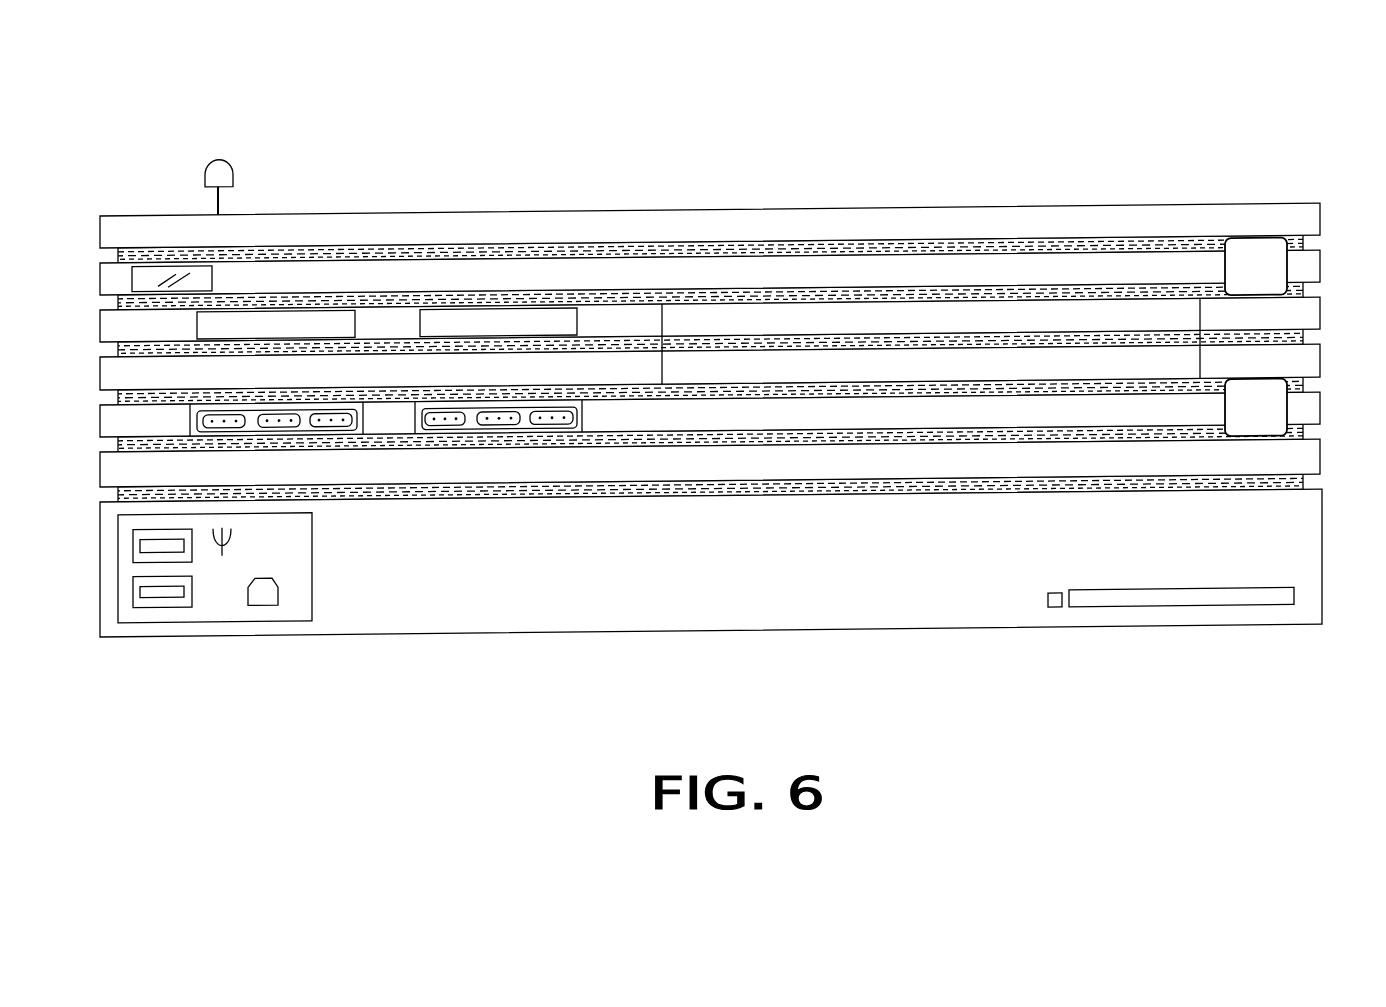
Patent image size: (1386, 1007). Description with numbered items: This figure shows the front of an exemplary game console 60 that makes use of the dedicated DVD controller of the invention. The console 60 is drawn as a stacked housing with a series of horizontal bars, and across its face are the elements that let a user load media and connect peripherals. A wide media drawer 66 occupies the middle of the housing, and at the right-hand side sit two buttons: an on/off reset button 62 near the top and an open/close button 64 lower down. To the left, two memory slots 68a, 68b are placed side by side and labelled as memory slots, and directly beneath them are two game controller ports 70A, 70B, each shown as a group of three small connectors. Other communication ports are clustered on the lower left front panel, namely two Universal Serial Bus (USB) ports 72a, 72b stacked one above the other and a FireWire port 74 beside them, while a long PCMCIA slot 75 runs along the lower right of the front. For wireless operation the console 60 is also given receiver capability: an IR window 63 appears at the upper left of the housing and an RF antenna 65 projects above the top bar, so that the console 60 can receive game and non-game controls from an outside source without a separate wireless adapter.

The game console 60 is at (715, 217).
The on/off reset button 62 is at (1272, 267).
The IR window 63 is at (153, 270).
The open/close button 64 is at (1272, 410).
The RF antenna 65 is at (216, 163).
The media drawer 66 is at (1033, 313).
The memory slot 68a is at (308, 308).
The memory slot 68b is at (552, 307).
The game controller port 70A is at (303, 425).
The game controller port 70B is at (527, 423).
The Universal Serial Bus (USB) port 72a is at (132, 550).
The Universal Serial Bus (USB) port 72b is at (185, 603).
The IEEE 1394 FireWire port 74 is at (263, 598).
The PCMCIA slot 75 is at (1180, 598).